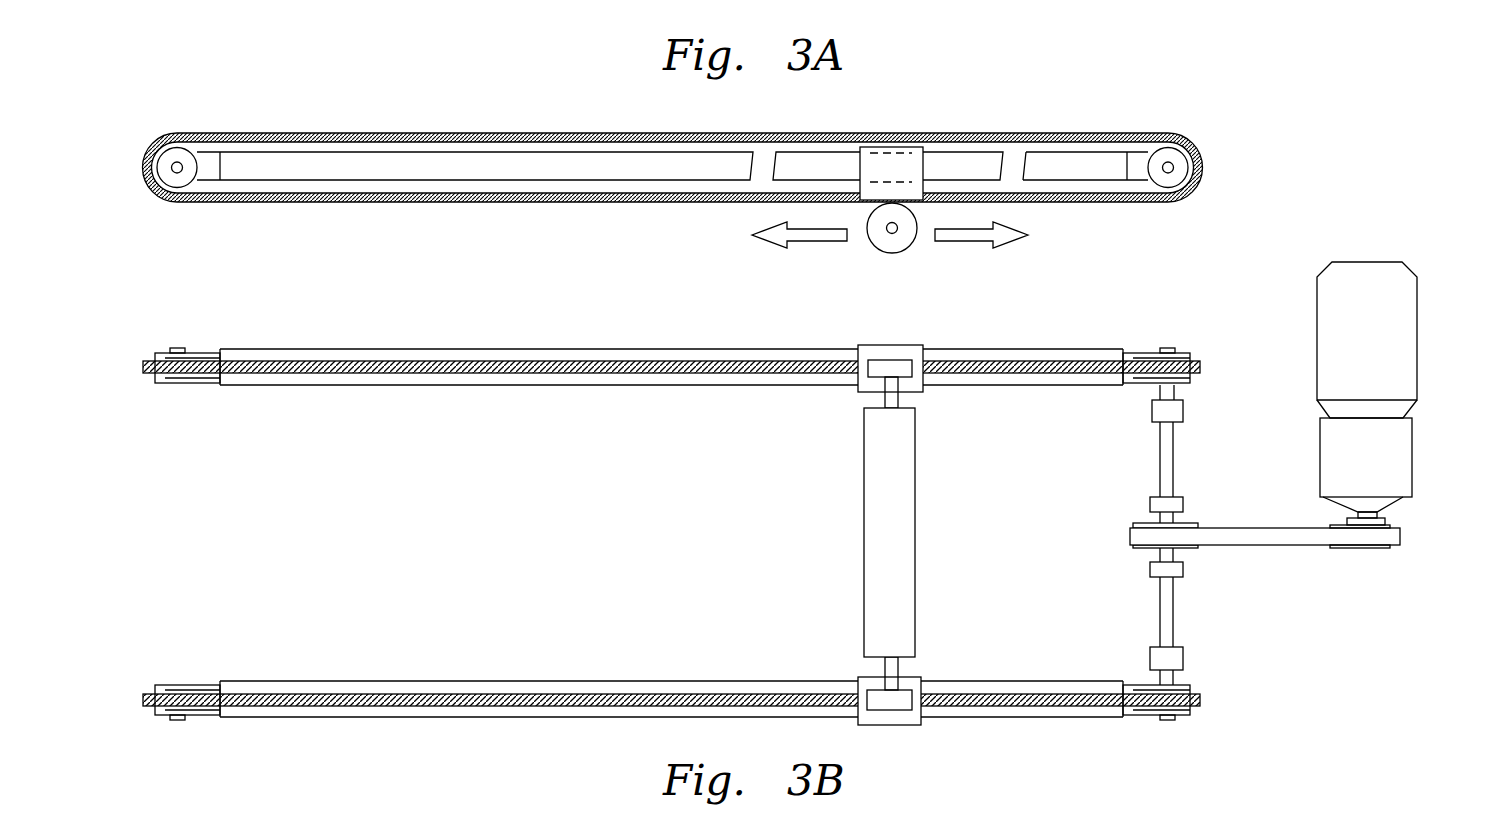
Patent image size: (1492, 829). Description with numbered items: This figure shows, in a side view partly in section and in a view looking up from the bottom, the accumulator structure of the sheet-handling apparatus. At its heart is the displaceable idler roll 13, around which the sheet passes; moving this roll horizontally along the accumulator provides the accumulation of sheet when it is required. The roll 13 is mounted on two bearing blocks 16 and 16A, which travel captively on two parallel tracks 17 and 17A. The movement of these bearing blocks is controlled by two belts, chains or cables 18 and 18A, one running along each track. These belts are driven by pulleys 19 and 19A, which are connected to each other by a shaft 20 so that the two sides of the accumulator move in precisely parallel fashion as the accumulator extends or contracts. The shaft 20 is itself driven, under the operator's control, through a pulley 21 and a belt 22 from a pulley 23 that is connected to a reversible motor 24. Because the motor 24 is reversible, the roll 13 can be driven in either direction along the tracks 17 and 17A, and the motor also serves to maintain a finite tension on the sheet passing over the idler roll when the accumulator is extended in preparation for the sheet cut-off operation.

In FIG. 3A, the displaceable idler roll 13 is at (900, 242).
In FIG. 3B, the displaceable idler roll 13 is at (907, 515).
In FIG. 3A, the bearing block 16 is at (887, 152).
In FIG. 3B, the bearing block 16 is at (915, 390).
In FIG. 3B, the bearing block 16A is at (910, 680).
In FIG. 3A, the track 17 is at (672, 140).
In FIG. 3B, the track 17 is at (639, 333).
In FIG. 3B, the track 17A is at (639, 666).
In FIG. 3A, the belt 18 is at (1103, 205).
In FIG. 3B, the belt 18 is at (1017, 375).
In FIG. 3B, the belt 18A is at (1015, 692).
In FIG. 3B, the pulley 19 is at (1195, 355).
In FIG. 3B, the pulley 19A is at (1193, 690).
In FIG. 3B, the shaft 20 is at (1168, 627).
In FIG. 3B, the pulley 21 is at (1192, 523).
In FIG. 3B, the belt 22 is at (1275, 545).
In FIG. 3B, the pulley 23 is at (1393, 548).
In FIG. 3B, the reversible motor 24 is at (1405, 275).